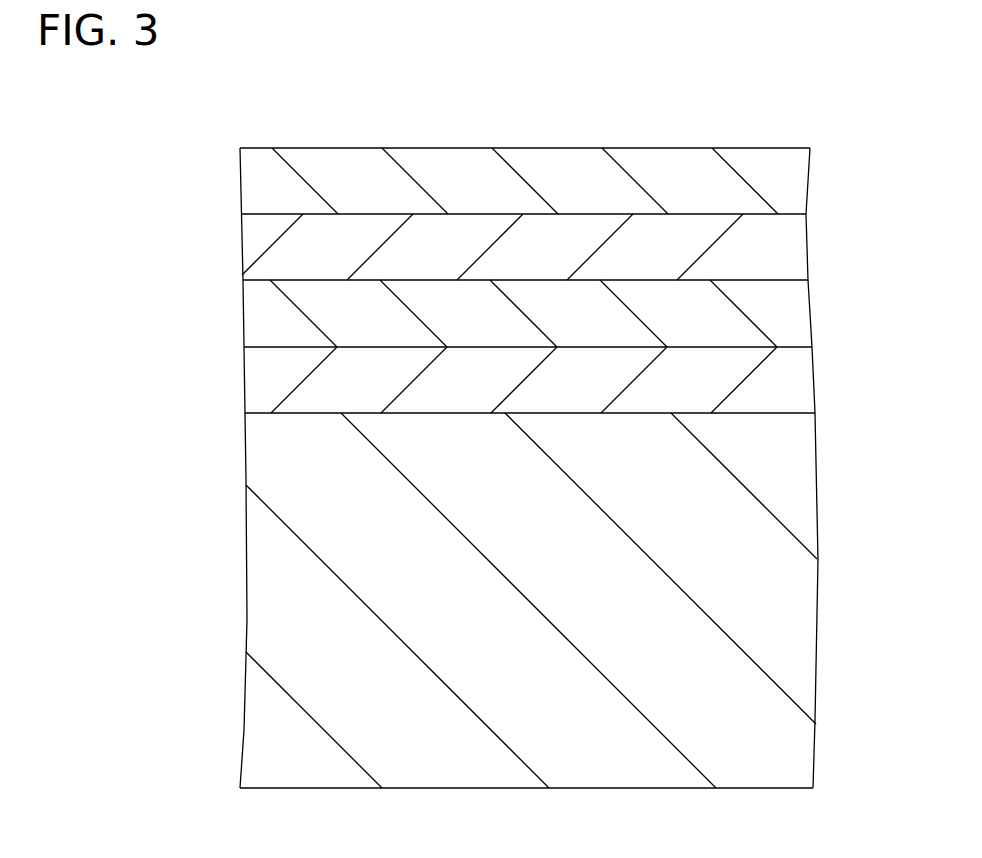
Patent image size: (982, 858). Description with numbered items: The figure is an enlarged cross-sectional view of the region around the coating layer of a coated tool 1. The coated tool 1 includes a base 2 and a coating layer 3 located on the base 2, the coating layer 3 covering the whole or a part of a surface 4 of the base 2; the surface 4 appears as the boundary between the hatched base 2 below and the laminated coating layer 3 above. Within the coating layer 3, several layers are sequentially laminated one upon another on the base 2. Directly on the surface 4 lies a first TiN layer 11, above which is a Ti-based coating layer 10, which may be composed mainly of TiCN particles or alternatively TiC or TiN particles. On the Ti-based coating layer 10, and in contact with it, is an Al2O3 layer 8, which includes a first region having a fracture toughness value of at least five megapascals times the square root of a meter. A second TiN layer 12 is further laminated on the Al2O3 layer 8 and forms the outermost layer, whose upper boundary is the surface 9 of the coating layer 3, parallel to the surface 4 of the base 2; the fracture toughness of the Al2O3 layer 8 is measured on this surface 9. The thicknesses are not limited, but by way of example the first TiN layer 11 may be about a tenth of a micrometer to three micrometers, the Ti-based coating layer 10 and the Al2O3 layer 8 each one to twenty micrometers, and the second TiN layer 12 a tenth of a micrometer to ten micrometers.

The coated tool 1 is at (255, 106).
The base 2 is at (795, 602).
The coating layer 3 is at (193, 148).
The surface of the base 4 is at (753, 413).
The Al2O3 layer 8 is at (787, 245).
The surface of the coating layer 9 is at (736, 148).
The Ti-based coating layer 10 is at (790, 312).
The first TiN layer 11 is at (800, 373).
The second TiN layer 12 is at (787, 178).